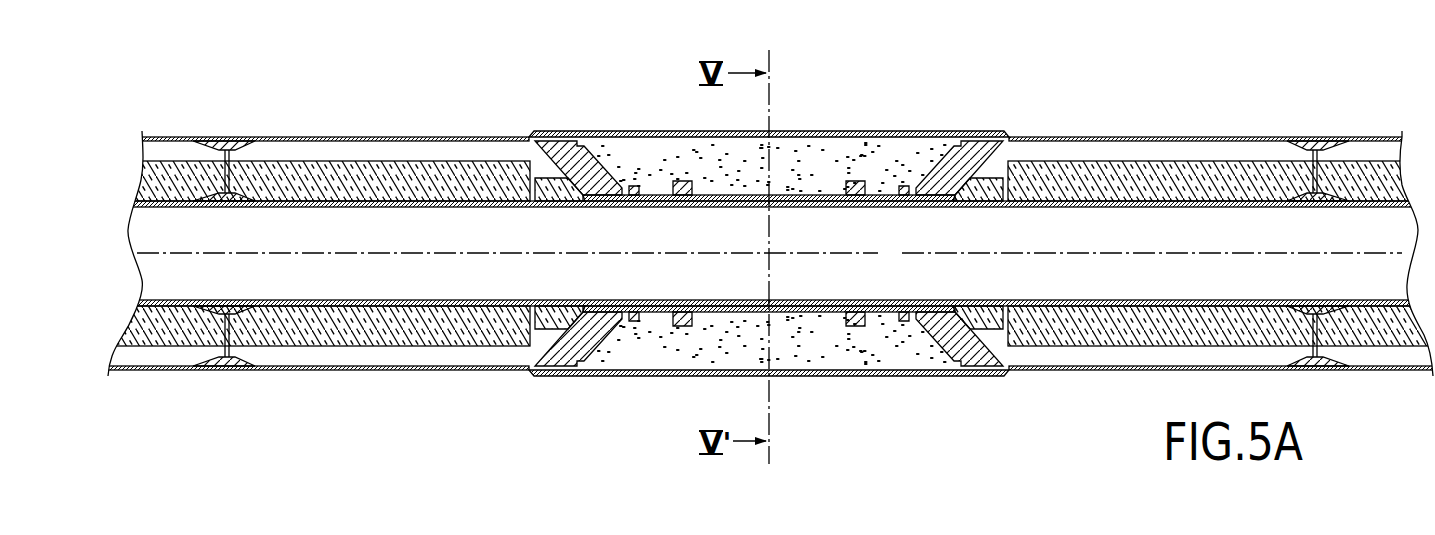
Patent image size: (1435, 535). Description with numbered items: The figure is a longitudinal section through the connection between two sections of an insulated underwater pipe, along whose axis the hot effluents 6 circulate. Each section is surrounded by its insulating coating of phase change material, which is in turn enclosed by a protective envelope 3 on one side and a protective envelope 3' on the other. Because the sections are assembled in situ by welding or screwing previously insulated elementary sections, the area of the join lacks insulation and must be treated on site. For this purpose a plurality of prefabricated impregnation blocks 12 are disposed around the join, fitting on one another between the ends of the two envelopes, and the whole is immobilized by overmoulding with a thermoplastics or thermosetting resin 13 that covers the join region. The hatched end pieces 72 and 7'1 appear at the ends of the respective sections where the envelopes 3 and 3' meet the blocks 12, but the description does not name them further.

The protective envelope 3 is at (434, 220).
The protective envelope 3' is at (1102, 218).
The wedge-shaped end ring of first pipe 72 is at (605, 157).
The wedge-shaped end ring of second pipe 7'1 is at (959, 213).
The prefabricated impregnation blocks 12 is at (663, 158).
The thermoplastics or thermosetting resin 13 is at (804, 128).
The effluents 6 is at (900, 263).